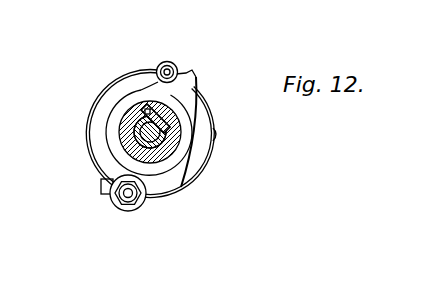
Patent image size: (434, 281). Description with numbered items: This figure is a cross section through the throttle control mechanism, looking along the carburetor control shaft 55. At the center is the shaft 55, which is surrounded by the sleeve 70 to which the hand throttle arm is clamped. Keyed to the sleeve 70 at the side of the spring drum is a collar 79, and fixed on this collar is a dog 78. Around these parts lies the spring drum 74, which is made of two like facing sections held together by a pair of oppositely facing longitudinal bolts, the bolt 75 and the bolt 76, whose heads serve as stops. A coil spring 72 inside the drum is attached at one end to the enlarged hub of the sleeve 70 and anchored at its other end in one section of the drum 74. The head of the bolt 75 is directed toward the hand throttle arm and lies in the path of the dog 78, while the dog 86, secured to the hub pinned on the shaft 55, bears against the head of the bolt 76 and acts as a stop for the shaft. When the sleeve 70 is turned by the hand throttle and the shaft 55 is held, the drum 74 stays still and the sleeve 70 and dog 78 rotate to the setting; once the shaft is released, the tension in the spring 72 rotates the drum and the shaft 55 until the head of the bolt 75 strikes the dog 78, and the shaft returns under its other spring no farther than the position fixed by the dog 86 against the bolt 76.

The carburetor control shaft 55 is at (167, 140).
The sleeve 70 is at (173, 132).
The coil spring 72 is at (215, 140).
The spring drum 74 is at (92, 152).
The bolt 75 is at (177, 63).
The bolt 76 is at (130, 198).
The dog 78 is at (191, 69).
The collar 79 is at (168, 100).
The dog 86 is at (102, 190).